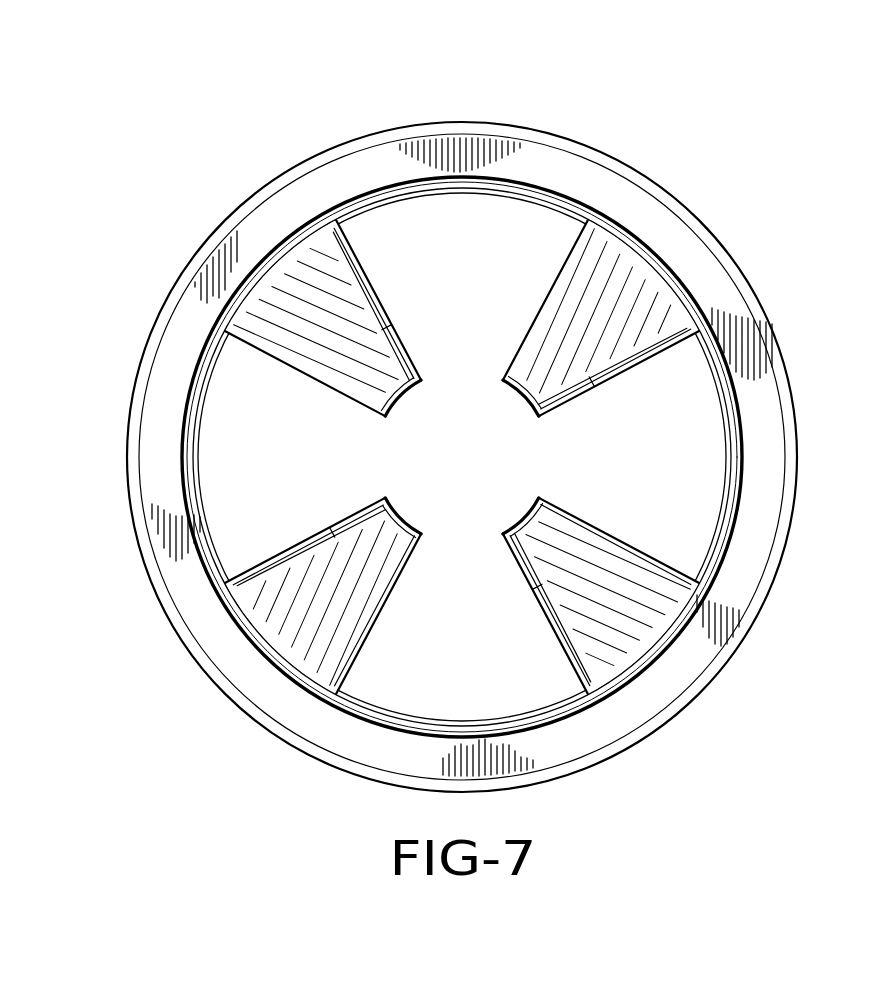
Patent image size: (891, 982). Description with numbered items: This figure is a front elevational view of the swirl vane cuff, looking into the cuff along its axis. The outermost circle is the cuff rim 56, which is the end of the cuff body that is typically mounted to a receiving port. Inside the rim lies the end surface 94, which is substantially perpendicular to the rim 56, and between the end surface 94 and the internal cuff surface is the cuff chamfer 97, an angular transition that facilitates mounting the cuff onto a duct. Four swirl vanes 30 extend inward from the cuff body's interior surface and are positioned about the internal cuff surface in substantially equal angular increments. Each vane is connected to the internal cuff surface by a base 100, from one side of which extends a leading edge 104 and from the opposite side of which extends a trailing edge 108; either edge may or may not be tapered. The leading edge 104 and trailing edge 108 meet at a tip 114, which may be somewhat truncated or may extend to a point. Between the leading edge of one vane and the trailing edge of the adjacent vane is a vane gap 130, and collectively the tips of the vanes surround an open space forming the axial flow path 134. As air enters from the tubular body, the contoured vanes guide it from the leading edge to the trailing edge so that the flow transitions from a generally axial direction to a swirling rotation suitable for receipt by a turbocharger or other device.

The swirl vane 30 is at (410, 589).
The cuff rim 56 is at (546, 128).
The end surface 94 is at (615, 200).
The cuff chamfer 97 is at (732, 509).
The base 100 is at (665, 292).
The leading edge 104 is at (370, 621).
The trailing edge 108 is at (537, 596).
The tip 114 is at (514, 503).
The vane gap 130 is at (551, 291).
The axial flow path 134 is at (484, 469).